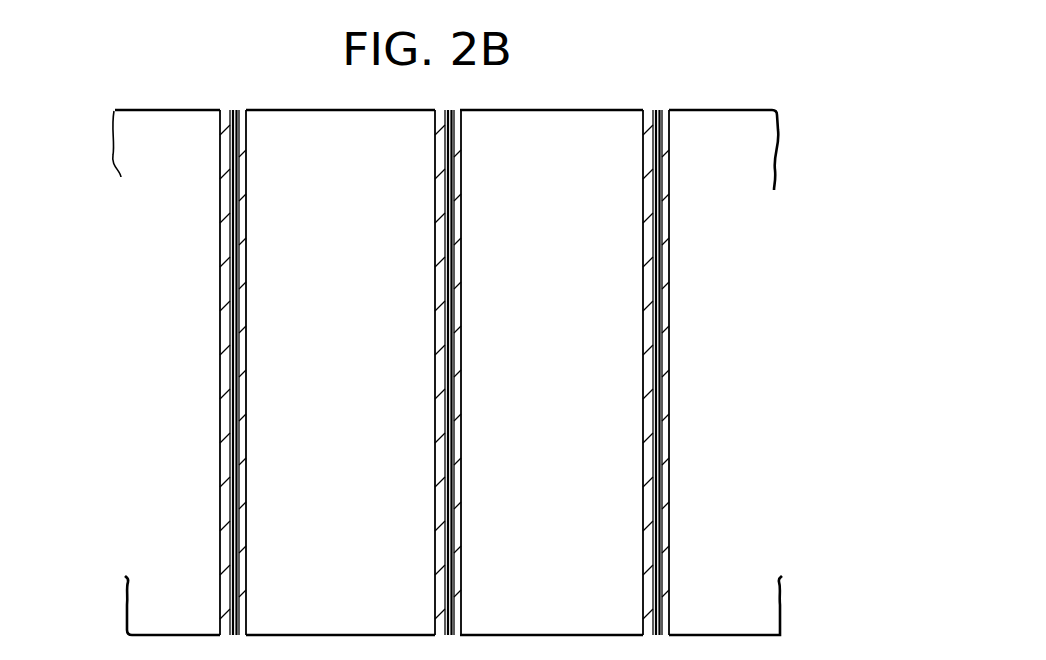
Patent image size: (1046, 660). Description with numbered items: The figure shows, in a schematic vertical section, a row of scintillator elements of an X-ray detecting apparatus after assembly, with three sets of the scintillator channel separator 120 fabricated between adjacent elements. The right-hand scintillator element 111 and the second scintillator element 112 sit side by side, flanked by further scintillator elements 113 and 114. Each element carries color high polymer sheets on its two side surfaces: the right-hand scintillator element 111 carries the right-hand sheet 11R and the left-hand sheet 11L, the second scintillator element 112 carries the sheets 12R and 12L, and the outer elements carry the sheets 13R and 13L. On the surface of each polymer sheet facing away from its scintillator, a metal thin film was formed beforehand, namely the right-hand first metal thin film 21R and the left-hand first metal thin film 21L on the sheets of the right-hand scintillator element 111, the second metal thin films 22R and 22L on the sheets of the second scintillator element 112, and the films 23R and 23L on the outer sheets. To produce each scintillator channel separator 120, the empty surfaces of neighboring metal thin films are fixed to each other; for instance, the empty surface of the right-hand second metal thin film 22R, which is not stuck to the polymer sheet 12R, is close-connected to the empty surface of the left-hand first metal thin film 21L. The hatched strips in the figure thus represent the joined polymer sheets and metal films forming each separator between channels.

The scintillator channel separator 120 is at (872, 70).
The right-hand color polymer sheet 13R is at (222, 268).
The left-hand color polymer sheet 12L is at (248, 265).
The right-hand color polymer sheet 12R is at (436, 263).
The left-hand color polymer sheet 11L is at (462, 262).
The right-hand color polymer sheet 11R is at (644, 263).
The left-hand color polymer sheet 13L is at (670, 262).
The right-hand metal thin film 23R is at (232, 392).
The left-hand second metal thin film 22L is at (240, 392).
The right-hand second metal thin film 22R is at (450, 382).
The left-hand first metal thin film 21L is at (450, 383).
The right-hand first metal thin film 21R is at (650, 381).
The left-hand metal thin film 23L is at (660, 383).
The right-hand scintillator element 111 is at (628, 475).
The second scintillator element 112 is at (295, 472).
The scintillator element 113 is at (765, 595).
The scintillator element 114 is at (145, 595).